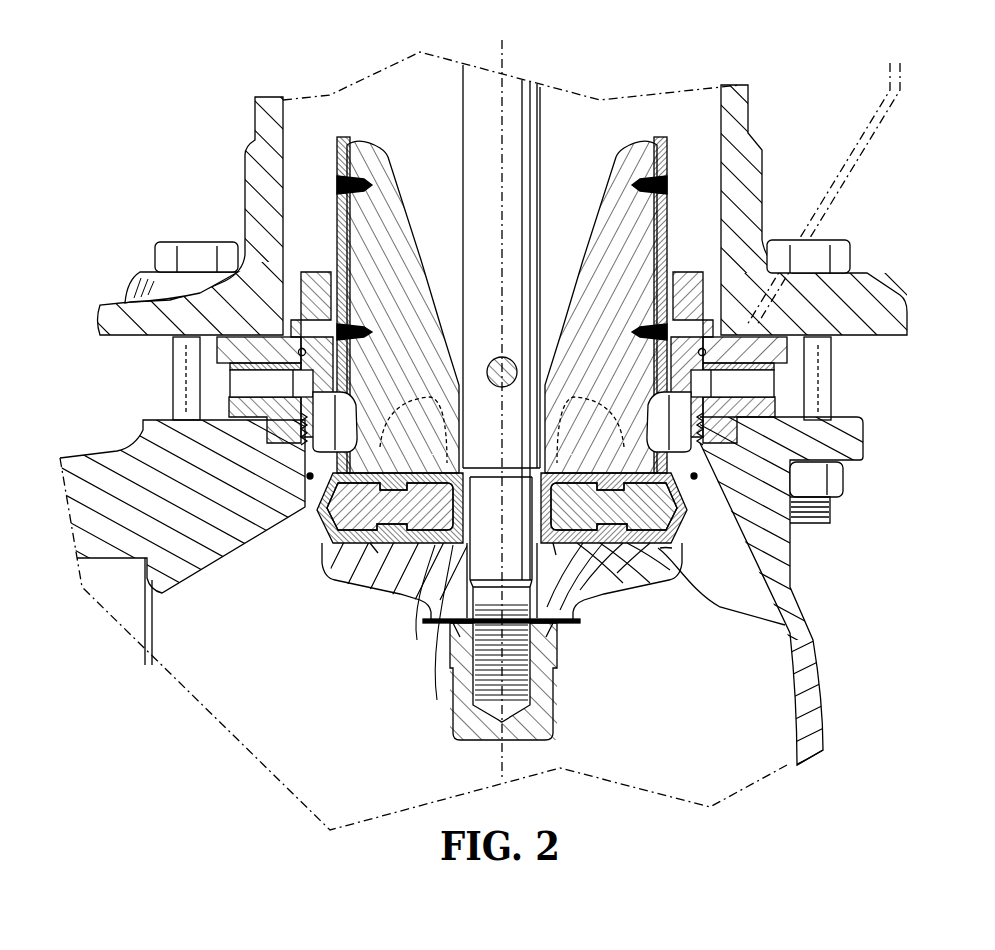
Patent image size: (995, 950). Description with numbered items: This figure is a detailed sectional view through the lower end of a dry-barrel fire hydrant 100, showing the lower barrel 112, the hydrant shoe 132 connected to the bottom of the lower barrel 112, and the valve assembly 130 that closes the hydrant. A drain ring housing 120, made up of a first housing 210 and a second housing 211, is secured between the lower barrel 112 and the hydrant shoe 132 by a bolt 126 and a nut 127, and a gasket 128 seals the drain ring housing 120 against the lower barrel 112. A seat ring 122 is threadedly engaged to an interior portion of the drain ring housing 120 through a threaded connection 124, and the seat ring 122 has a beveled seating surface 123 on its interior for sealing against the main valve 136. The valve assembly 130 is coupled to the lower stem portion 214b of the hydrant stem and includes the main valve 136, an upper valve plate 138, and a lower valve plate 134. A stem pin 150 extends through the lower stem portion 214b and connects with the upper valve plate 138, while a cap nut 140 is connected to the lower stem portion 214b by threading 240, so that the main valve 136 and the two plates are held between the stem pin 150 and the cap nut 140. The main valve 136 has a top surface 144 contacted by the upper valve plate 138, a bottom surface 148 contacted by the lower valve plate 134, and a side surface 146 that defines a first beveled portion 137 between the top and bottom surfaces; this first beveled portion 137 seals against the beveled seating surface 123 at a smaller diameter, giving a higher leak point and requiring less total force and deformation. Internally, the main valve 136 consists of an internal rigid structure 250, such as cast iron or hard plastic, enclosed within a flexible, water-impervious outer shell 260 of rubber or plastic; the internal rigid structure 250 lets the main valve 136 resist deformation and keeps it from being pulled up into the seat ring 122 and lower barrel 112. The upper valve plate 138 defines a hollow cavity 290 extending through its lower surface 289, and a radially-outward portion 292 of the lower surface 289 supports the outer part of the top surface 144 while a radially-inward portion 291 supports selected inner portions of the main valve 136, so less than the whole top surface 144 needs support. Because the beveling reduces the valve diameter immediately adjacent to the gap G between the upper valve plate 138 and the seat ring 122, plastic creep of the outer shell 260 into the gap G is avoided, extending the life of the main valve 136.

The hydrant 100 is at (240, 195).
The lower barrel 112 is at (740, 157).
The drain ring housing 120 is at (807, 352).
The seat ring 122 is at (680, 272).
The beveled seating surface 123 is at (307, 507).
The threaded connection 124 is at (205, 420).
The bolt 126 is at (849, 257).
The nut 127 is at (843, 478).
The gasket 128 is at (197, 350).
The valve assembly 130 is at (630, 620).
The hydrant shoe 132 is at (822, 650).
The lower valve plate 134 is at (418, 543).
The main valve 136 is at (792, 605).
The first beveled portion 137 is at (700, 493).
The upper valve plate 138 is at (605, 247).
The cap nut 140 is at (473, 742).
The top surface 144 is at (345, 262).
The side surface 146 is at (313, 543).
The bottom surface 148 is at (332, 543).
The stem pin 150 is at (497, 358).
The first housing 210 is at (833, 400).
The second housing 211 is at (780, 392).
The lower stem portion 214b is at (473, 187).
The threading 240 is at (578, 624).
The internal rigid structure 250 is at (402, 580).
The outer shell 260 is at (380, 549).
The lower surface 289 is at (611, 594).
The hollow cavity 290 is at (613, 582).
The radially-inward portion 291 is at (553, 543).
The radially-outward portion 292 is at (660, 548).
The gap G is at (868, 73).